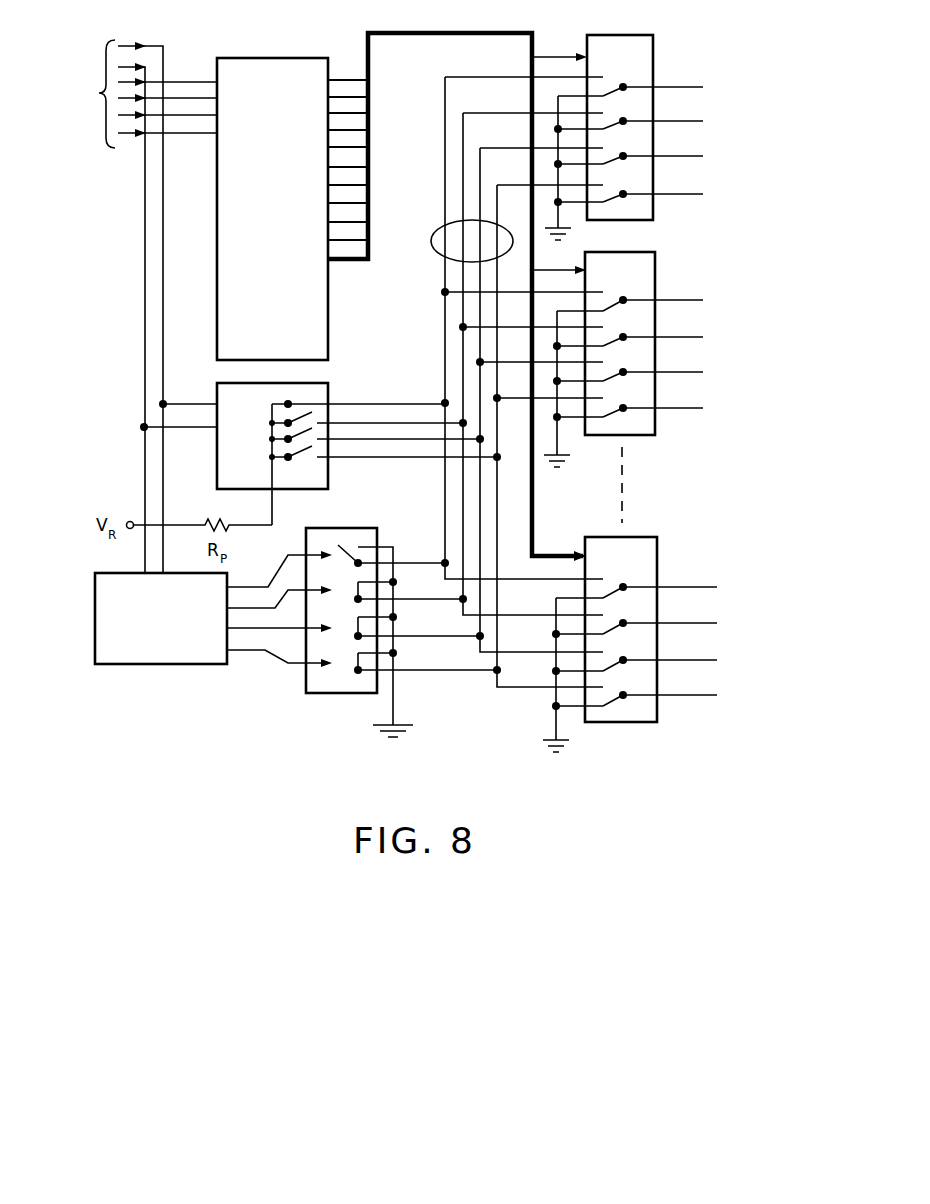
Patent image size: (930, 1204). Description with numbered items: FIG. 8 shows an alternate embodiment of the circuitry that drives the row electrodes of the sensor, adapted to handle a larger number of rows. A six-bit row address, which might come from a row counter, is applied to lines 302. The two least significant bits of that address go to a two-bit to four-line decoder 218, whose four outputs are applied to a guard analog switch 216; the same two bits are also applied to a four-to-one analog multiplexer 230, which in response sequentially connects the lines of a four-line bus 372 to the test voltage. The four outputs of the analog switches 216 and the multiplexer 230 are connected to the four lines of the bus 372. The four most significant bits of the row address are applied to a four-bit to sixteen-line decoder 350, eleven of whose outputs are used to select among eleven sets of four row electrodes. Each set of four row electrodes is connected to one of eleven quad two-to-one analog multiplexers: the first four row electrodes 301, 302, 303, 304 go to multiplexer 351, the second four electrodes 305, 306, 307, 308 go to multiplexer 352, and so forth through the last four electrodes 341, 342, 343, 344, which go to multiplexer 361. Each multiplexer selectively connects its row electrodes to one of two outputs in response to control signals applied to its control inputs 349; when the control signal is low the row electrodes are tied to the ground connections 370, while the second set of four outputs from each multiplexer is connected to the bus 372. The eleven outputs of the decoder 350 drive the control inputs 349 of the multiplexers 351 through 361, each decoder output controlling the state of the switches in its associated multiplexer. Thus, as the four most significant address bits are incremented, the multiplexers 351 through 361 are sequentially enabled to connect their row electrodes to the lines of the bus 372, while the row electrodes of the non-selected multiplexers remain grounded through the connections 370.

The four line bus 372 is at (184, 57).
The 4-bit to 16-line decoder 350 is at (280, 57).
The row address lines 302 is at (121, 157).
The multiplexer control inputs 349 is at (550, 53).
The quad 2-to-1 analog multiplexer 351 is at (616, 35).
The row electrode 301 is at (690, 87).
The row electrode 303 is at (690, 156).
The row electrode 304 is at (690, 194).
The ground connections 370 is at (570, 224).
The quad 2-to-1 analog multiplexer 352 is at (650, 251).
The row electrode 305 is at (690, 300).
The row electrode 306 is at (690, 337).
The row electrode 307 is at (690, 372).
The row electrode 308 is at (690, 408).
The quad 2-to-1 analog multiplexer 361 is at (638, 537).
The row electrode 341 is at (703, 587).
The row electrode 342 is at (703, 623).
The row electrode 343 is at (703, 660).
The row electrode 344 is at (703, 695).
The 4-to-1 analog multiplexer 230 is at (330, 384).
The 2-bit to 4-line decoder 218 is at (137, 668).
The guard analog switch 216 is at (358, 527).